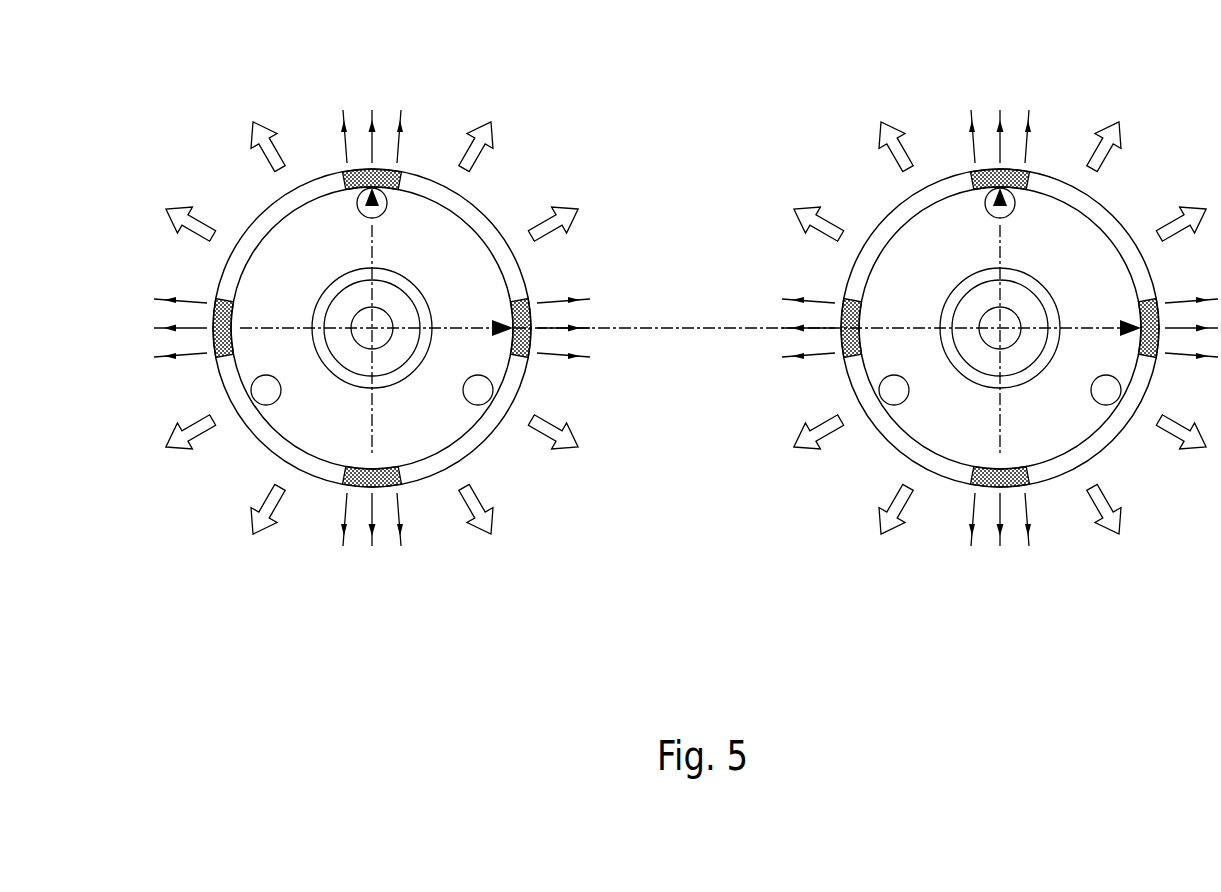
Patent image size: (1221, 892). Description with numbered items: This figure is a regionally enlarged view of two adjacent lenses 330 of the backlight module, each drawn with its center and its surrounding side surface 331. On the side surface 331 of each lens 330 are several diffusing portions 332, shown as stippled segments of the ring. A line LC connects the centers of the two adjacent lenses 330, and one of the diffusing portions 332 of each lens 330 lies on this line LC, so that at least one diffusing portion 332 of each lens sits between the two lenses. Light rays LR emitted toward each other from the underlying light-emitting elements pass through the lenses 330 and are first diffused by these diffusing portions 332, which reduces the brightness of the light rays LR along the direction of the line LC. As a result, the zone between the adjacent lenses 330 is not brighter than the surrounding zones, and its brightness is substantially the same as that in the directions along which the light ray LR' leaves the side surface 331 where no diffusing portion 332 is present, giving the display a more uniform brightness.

The lens 330 is at (290, 237).
The side surface 331 is at (480, 217).
The diffusing portion 332 is at (530, 300).
The light ray LR is at (686, 328).
The light ray LR' is at (685, 302).
The line LC is at (670, 330).